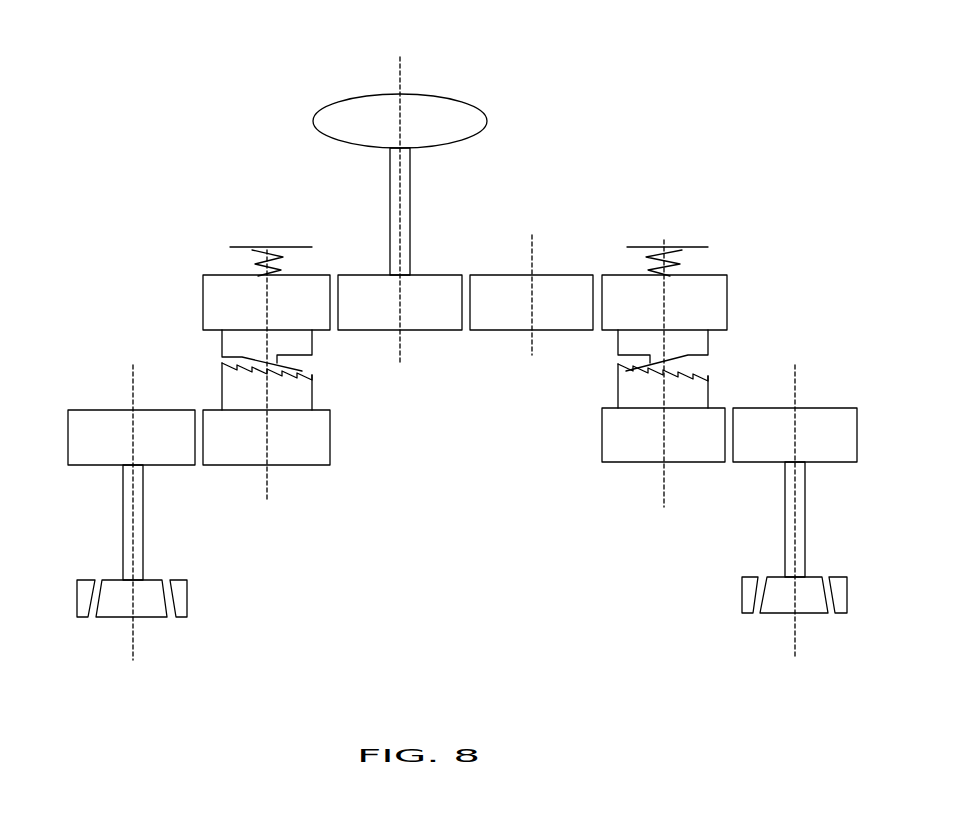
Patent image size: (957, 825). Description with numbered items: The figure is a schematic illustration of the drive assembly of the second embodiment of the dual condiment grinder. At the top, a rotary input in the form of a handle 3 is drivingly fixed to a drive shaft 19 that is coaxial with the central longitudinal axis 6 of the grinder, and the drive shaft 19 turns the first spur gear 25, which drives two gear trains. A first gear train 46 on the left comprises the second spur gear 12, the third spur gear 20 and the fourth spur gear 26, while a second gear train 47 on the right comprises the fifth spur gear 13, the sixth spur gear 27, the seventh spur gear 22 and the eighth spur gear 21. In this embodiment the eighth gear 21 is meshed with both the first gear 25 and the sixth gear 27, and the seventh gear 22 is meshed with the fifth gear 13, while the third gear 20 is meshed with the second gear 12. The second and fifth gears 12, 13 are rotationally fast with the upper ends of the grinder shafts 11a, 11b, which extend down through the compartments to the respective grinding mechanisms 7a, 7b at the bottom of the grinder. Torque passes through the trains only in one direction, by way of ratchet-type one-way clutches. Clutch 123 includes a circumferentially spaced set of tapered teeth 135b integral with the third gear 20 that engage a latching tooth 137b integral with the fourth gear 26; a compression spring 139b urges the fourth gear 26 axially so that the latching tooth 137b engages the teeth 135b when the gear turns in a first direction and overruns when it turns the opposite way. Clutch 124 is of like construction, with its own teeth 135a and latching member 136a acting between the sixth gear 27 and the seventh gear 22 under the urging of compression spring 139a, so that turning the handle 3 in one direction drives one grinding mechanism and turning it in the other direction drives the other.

The handle 3 is at (500, 118).
The central longitudinal axis 6 is at (400, 70).
The drive shaft 19 is at (412, 196).
The eighth spur gear 21 is at (497, 280).
The first spur gear 25 is at (358, 292).
The fourth spur gear 26 is at (220, 299).
The sixth spur gear 27 is at (620, 294).
The first gear train 46 is at (168, 168).
The second gear train 47 is at (772, 184).
The compression spring 139b is at (262, 239).
The compression spring 139a is at (668, 258).
The clutch 123 is at (213, 360).
The clutch 124 is at (600, 395).
The latching tooth 137b is at (268, 357).
The first set of teeth 135b is at (318, 375).
The right pawl member 136a is at (672, 358).
The right ratchet member 135a is at (610, 367).
The second spur gear 12 is at (100, 422).
The third spur gear 20 is at (295, 455).
The seventh spur gear 22 is at (622, 450).
The fifth spur gear 13 is at (832, 448).
The grinder shaft 11a is at (136, 528).
The grinder shaft 11b is at (797, 532).
The grinding mechanism 7a is at (98, 645).
The grinding mechanism 7b is at (776, 645).